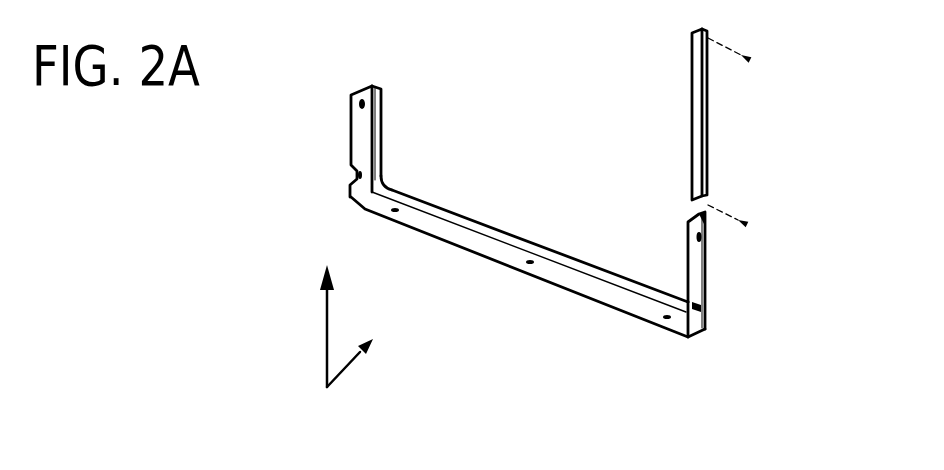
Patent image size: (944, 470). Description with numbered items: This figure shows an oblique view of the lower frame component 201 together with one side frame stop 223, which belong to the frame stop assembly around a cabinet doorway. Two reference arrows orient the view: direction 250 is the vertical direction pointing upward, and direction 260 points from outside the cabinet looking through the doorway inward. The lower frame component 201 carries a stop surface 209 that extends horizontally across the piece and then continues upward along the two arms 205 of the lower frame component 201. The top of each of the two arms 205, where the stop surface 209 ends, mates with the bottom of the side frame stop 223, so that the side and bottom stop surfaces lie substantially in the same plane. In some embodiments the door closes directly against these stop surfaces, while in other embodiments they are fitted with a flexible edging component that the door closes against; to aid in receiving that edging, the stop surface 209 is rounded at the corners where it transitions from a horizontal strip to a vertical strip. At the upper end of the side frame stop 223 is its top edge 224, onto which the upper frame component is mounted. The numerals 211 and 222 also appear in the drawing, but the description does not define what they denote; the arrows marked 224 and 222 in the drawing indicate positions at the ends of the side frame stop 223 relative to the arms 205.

The lower frame component 201 is at (467, 239).
The arms 205 is at (351, 135).
The stop surface 209 is at (573, 268).
The lower edge of bracket 211 is at (610, 308).
The side frame stop 223 is at (692, 102).
The top edge 224 is at (750, 60).
The movement direction 222 is at (747, 225).
The direction 250 is at (325, 322).
The direction 260 is at (350, 367).